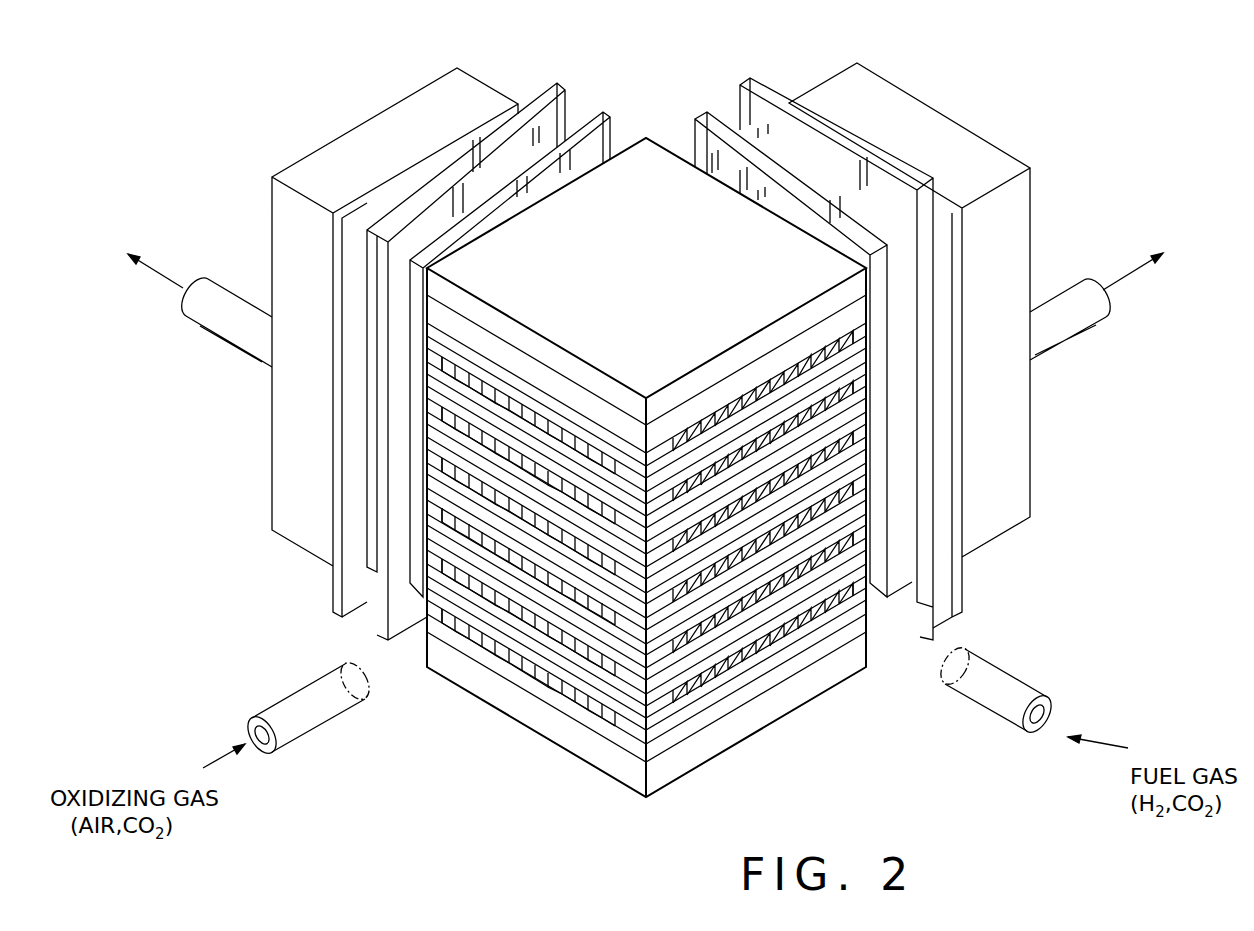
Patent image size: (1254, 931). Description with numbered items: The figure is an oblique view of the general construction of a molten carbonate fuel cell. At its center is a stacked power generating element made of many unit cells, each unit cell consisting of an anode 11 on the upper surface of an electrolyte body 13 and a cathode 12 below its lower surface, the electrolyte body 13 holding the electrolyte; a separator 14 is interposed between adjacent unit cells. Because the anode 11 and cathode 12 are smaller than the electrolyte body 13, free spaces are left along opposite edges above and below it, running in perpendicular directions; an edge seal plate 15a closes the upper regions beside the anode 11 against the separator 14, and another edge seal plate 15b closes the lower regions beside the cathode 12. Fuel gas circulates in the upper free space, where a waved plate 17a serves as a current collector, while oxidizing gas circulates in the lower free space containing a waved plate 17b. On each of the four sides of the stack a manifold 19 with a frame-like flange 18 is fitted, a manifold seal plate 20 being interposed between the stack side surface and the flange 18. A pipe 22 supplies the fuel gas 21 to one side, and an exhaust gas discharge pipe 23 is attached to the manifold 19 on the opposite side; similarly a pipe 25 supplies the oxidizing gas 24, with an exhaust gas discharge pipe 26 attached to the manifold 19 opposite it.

The anode 11 is at (740, 663).
The cathode 12 is at (565, 693).
The electrolyte body 13 is at (717, 683).
The separator 14 is at (673, 680).
The edge seal plate 15a is at (658, 705).
The edge seal plate 15b is at (630, 727).
The waved plate 17a is at (797, 620).
The waved plate 17b is at (510, 663).
The frame-like flange 18 is at (538, 100).
The manifold 19 is at (418, 108).
The manifold seal plate 20 is at (603, 108).
The fuel gas 21 is at (1101, 732).
The fuel gas supply pipe 22 is at (1018, 690).
The exhaust gas discharge pipe 23 is at (222, 325).
The oxidizing gas 24 is at (212, 745).
The oxidizing gas supply pipe 25 is at (316, 690).
The exhaust gas discharge pipe 26 is at (1085, 335).